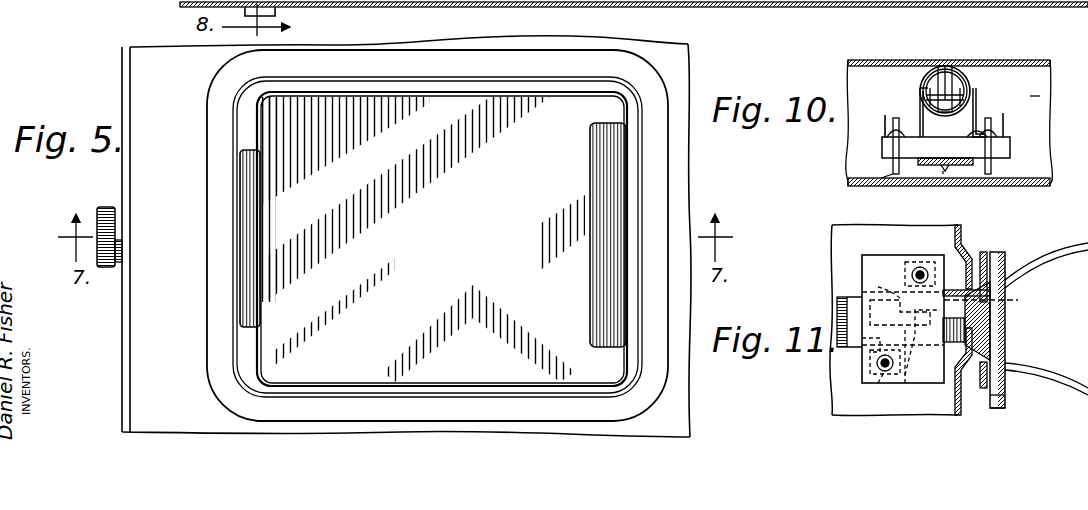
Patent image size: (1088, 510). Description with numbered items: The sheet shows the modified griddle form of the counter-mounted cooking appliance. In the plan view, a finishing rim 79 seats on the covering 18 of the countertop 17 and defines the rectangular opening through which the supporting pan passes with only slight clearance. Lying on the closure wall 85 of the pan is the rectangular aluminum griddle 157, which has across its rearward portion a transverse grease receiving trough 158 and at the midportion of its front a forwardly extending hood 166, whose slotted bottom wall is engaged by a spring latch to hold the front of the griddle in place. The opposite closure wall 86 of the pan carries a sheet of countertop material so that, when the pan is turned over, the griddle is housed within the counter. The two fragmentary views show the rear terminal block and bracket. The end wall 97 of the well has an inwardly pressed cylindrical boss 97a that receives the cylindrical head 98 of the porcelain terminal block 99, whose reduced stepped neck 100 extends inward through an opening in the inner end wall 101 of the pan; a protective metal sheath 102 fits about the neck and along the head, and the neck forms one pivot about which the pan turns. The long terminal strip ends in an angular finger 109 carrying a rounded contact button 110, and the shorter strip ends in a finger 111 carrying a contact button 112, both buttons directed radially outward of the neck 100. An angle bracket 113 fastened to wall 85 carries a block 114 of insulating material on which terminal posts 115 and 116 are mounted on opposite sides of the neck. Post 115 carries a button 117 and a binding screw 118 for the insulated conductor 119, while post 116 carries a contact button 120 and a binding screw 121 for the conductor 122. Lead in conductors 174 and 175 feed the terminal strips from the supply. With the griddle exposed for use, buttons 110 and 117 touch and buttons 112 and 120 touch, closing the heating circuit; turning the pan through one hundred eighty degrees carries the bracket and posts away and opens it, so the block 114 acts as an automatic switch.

In FIG. 5, the countertop 17 is at (120, 355).
In FIG. 5, the covering 18 is at (181, 366).
In FIG. 5, the finishing rim 79 is at (214, 127).
In FIG. 5, the griddle 157 is at (493, 242).
In FIG. 5, the grease receiving trough 158 is at (600, 264).
In FIG. 5, the hood 166 is at (242, 208).
In FIG. 10, the closure wall 85 is at (1040, 61).
In FIG. 11, the closure wall 85 is at (838, 402).
In FIG. 10, the closure wall 86 is at (1030, 182).
In FIG. 11, the end wall 97 is at (1006, 408).
In FIG. 11, the cylindrical boss 97a is at (993, 398).
In FIG. 11, the cylindrical head 98 is at (1000, 266).
In FIG. 11, the porcelain terminal block 99 is at (992, 322).
In FIG. 10, the neck 100 is at (968, 78).
In FIG. 11, the neck 100 is at (985, 335).
In FIG. 10, the inner end wall 101 is at (1056, 96).
In FIG. 11, the inner end wall 101 is at (959, 234).
In FIG. 11, the protective metal sheath 102 is at (986, 292).
In FIG. 10, the finger 109 is at (935, 112).
In FIG. 11, the finger 109 is at (886, 280).
In FIG. 10, the contact button 110 is at (935, 67).
In FIG. 11, the contact button 110 is at (878, 287).
In FIG. 10, the finger 111 is at (968, 115).
In FIG. 11, the finger 111 is at (946, 360).
In FIG. 10, the contact button 112 is at (946, 63).
In FIG. 11, the contact button 112 is at (906, 383).
In FIG. 11, the angle bracket 113 is at (838, 310).
In FIG. 10, the block of insulating material 114 is at (880, 148).
In FIG. 11, the block of insulating material 114 is at (877, 261).
In FIG. 10, the terminal post 115 is at (884, 126).
In FIG. 11, the terminal post 115 is at (880, 383).
In FIG. 10, the terminal post 116 is at (1008, 120).
In FIG. 11, the terminal post 116 is at (906, 262).
In FIG. 10, the button 117 is at (918, 93).
In FIG. 11, the button 117 is at (875, 358).
In FIG. 10, the binding screw 118 is at (895, 127).
In FIG. 11, the binding screw 118 is at (878, 366).
In FIG. 10, the conductor 119 is at (892, 171).
In FIG. 10, the contact button 120 is at (975, 100).
In FIG. 11, the contact button 120 is at (1001, 300).
In FIG. 10, the binding screw 121 is at (985, 130).
In FIG. 10, the conductor 122 is at (987, 174).
In FIG. 11, the lead in conductor 174 is at (1052, 248).
In FIG. 11, the lead in conductor 175 is at (1046, 378).